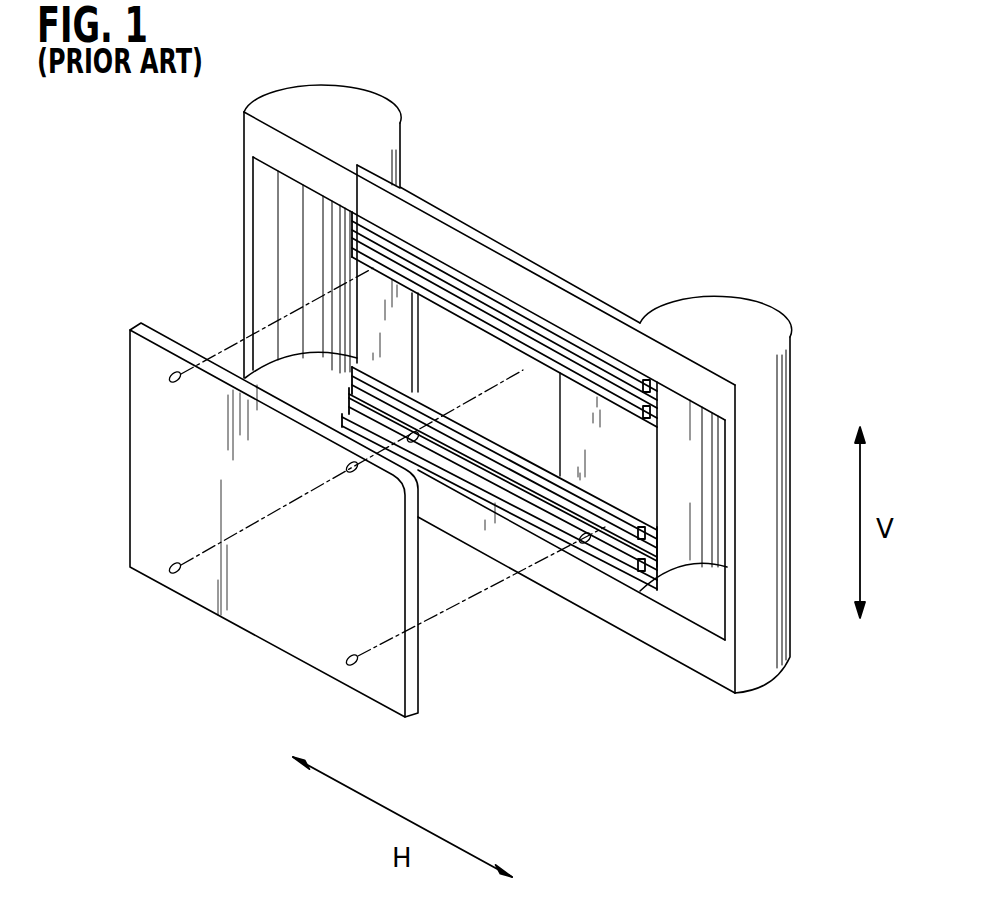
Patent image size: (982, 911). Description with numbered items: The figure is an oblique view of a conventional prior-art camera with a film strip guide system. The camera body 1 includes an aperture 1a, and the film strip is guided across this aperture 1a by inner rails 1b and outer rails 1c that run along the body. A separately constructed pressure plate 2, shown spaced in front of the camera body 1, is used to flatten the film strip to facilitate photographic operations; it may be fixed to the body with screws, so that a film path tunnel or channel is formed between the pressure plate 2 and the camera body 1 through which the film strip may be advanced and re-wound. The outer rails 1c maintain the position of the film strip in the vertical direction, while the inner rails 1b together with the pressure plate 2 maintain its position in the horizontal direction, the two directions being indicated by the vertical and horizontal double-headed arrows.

The camera body 1 is at (463, 250).
The aperture 1a is at (560, 402).
The inner rails 1b is at (640, 510).
The outer rails 1c is at (618, 376).
The pressure plate 2 is at (263, 600).